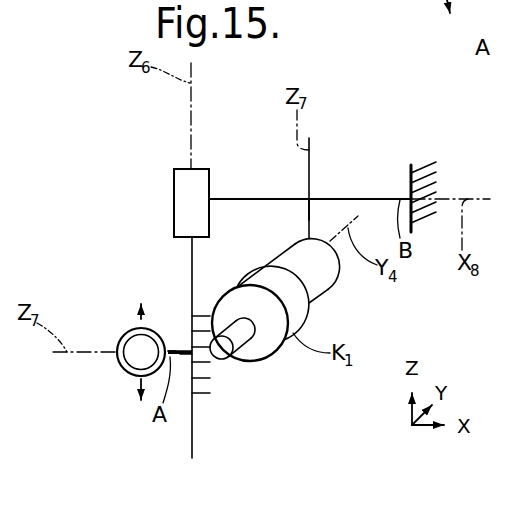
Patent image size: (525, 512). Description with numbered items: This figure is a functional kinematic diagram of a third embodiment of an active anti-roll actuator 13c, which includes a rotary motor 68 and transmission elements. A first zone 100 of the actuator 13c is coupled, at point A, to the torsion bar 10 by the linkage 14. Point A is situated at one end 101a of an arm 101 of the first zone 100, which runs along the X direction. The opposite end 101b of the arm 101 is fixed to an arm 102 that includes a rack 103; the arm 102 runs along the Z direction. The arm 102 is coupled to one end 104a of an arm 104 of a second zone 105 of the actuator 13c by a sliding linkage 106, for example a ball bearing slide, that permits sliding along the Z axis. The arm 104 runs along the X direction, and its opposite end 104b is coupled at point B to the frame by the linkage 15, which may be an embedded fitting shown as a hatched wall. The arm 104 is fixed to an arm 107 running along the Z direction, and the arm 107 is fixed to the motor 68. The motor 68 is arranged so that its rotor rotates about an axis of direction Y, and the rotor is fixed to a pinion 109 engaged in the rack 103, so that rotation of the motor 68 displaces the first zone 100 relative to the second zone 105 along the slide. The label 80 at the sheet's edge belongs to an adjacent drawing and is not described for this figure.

The actuator 13c is at (150, 135).
The sliding linkage 106 is at (174, 189).
The arm 102 is at (191, 247).
The arm 104 is at (258, 198).
The end of arm 104 104a is at (219, 198).
The opposite end of arm 104 104b is at (394, 198).
The second zone 105 is at (323, 180).
The arm 107 is at (309, 222).
The linkage 15 is at (411, 166).
The rotary motor 68 is at (326, 290).
The pinion 109 is at (254, 354).
The rack 103 is at (208, 393).
The first zone 100 is at (182, 328).
The arm 101 is at (175, 357).
The end of arm 101 101a is at (169, 350).
The opposite end of arm 101 101b is at (181, 357).
The torsion bar 10 is at (133, 346).
The linkage 14 is at (126, 374).
The element of adjacent figure 80 is at (477, 0).